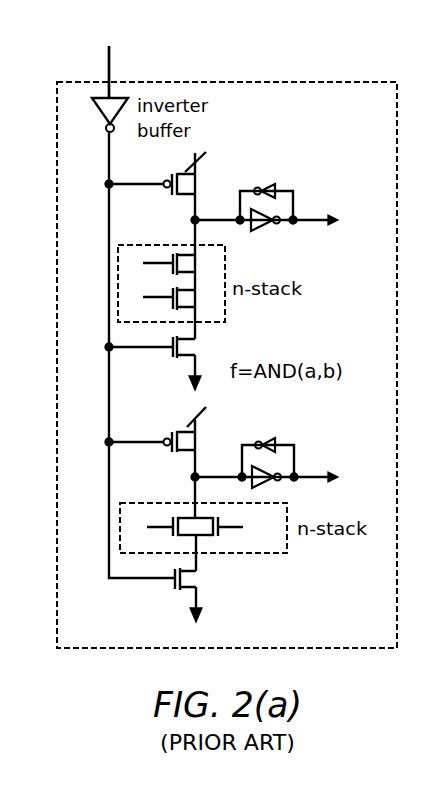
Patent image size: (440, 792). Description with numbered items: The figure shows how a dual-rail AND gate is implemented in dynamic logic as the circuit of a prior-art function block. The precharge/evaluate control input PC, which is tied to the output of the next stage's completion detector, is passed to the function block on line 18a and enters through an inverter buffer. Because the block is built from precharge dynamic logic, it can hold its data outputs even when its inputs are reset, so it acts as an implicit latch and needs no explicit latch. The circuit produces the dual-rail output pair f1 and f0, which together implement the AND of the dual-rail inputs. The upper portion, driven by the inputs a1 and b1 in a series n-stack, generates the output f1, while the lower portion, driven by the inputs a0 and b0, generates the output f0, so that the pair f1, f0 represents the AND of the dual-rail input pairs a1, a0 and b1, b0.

The line 18a is at (109, 60).
The precharge/evaluate control input PC is at (126, 72).
The dual-rail output f1 is at (266, 207).
The dual-rail output f0 is at (266, 463).
The dual-rail input a1 is at (159, 267).
The dual-rail input b1 is at (159, 301).
The dual-rail input a0 is at (149, 531).
The dual-rail input b0 is at (245, 531).